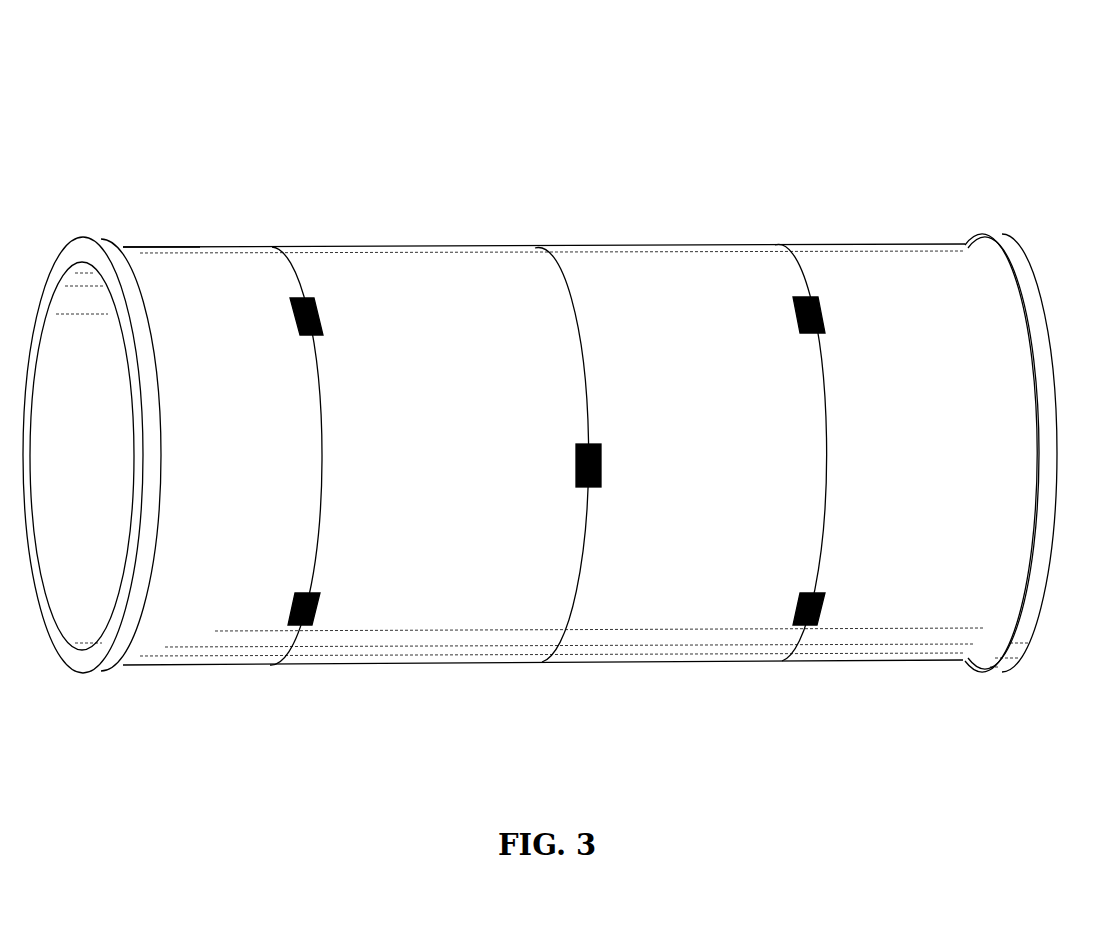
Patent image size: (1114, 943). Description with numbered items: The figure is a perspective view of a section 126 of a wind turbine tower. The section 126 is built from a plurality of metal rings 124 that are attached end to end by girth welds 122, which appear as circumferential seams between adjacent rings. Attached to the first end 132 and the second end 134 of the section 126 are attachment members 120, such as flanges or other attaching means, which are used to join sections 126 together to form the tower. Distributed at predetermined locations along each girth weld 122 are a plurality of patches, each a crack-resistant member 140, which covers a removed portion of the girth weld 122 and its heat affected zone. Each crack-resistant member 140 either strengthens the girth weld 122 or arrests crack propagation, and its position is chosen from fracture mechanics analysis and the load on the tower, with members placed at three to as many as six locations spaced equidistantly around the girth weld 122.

The attachment member 120 is at (95, 237).
The girth weld 122 is at (325, 447).
The metal ring 124 is at (262, 480).
The section 126 is at (545, 90).
The first end 132 is at (120, 247).
The second end 134 is at (962, 243).
The crack-resistant member 140 is at (318, 312).